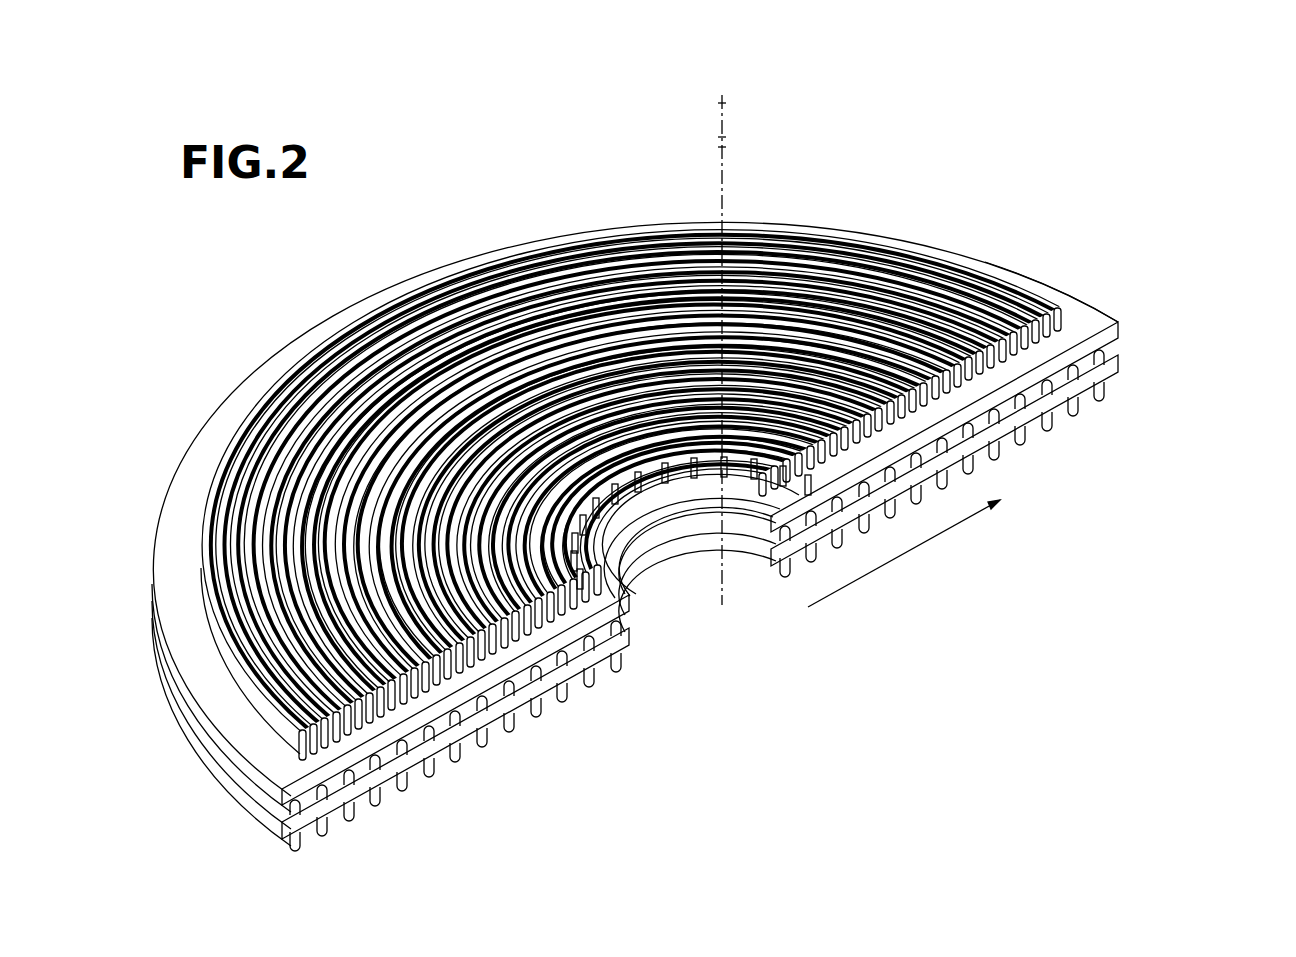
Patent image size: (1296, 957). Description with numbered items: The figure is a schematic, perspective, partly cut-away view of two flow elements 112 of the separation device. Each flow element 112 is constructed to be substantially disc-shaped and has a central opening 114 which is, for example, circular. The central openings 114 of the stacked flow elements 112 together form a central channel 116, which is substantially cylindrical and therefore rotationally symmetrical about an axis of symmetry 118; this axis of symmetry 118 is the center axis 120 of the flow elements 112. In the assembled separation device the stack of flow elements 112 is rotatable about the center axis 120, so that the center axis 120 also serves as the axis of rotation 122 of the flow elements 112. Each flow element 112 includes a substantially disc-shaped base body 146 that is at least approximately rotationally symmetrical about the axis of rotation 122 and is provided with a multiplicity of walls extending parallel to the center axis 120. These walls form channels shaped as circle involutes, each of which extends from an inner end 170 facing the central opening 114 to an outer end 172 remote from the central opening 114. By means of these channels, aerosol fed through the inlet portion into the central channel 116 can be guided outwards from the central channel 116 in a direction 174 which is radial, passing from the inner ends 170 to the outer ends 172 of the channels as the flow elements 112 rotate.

The flow element 112 is at (635, 442).
The central opening 114 is at (752, 405).
The central channel 116 is at (708, 680).
The axis of symmetry 118 is at (781, 159).
The center axis 120 is at (781, 107).
The axis of rotation 122 is at (781, 57).
The base body 146 is at (688, 556).
The inner end 170 is at (664, 466).
The outer end 172 is at (390, 718).
The direction 174 is at (906, 565).